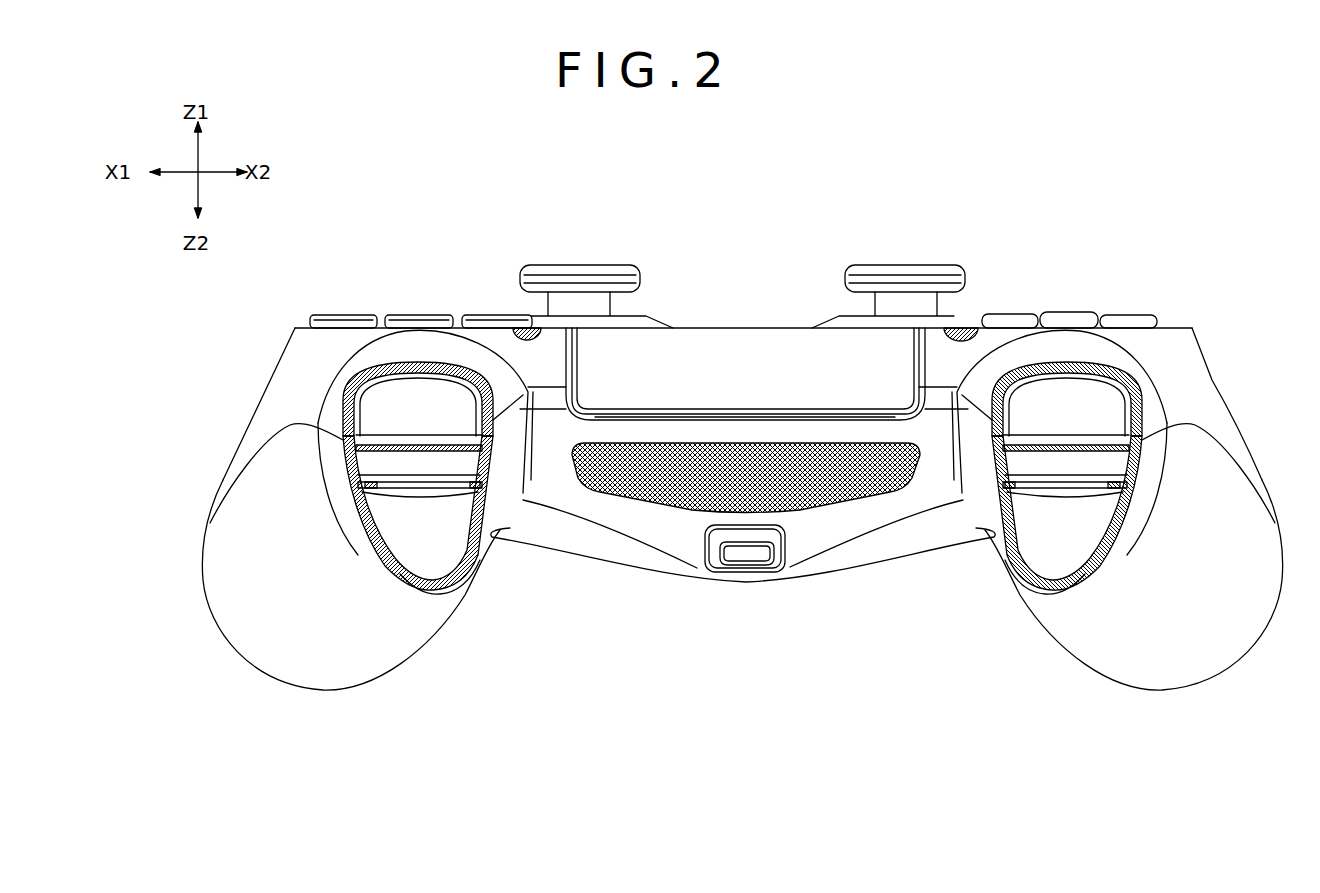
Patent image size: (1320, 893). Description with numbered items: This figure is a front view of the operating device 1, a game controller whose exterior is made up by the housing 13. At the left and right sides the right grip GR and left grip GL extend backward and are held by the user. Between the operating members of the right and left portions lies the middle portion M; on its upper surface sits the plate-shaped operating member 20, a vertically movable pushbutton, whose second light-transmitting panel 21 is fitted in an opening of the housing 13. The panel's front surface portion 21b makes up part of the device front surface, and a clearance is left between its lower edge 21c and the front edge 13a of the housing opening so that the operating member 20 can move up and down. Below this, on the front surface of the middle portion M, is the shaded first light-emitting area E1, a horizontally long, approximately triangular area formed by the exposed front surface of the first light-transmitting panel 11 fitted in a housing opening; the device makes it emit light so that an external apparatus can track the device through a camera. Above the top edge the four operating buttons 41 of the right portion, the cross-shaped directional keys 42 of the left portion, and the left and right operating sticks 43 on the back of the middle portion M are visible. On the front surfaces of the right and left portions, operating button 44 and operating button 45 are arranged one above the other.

The operating device 1 is at (1055, 236).
The first light-transmitting panel 11 is at (655, 492).
The housing 13 is at (1213, 382).
The front edge of the opening of the housing 13a is at (690, 407).
The operating member 20 is at (890, 328).
The second light-transmitting panel 21 is at (730, 328).
The front surface portion 21b is at (797, 355).
The lower edge of the front surface portion 21c is at (822, 420).
The operating buttons 41 is at (498, 317).
The directional keys 42 is at (1078, 303).
The operating sticks 43 is at (580, 265).
The operating button 44 is at (373, 400).
The operating button 45 is at (406, 557).
The first light-emitting area E1 is at (795, 512).
The middle portion M is at (567, 567).
The right grip GR is at (283, 692).
The left grip GL is at (1218, 690).